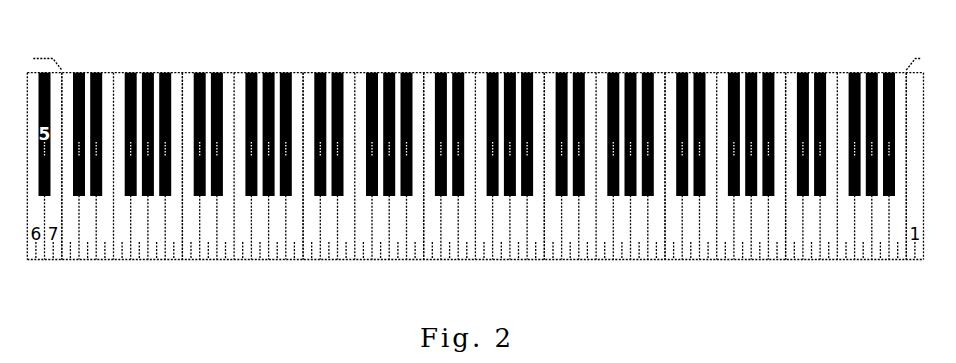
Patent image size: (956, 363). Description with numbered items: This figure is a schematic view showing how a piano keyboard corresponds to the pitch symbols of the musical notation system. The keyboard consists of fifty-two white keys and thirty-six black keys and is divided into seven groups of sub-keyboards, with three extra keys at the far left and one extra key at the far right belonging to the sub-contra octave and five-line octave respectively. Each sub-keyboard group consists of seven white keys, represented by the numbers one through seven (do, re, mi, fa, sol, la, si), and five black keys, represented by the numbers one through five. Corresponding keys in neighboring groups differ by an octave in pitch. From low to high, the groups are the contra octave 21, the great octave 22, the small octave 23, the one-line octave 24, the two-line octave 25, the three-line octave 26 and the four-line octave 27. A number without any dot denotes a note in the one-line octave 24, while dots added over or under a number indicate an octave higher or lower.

The contra octave 21 is at (62, 70).
The great octave 22 is at (182, 70).
The small octave 23 is at (424, 70).
The one-line octave 24 is at (424, 70).
The two-line octave 25 is at (544, 70).
The three-line octave 26 is at (786, 70).
The four-line octave 27 is at (786, 70).